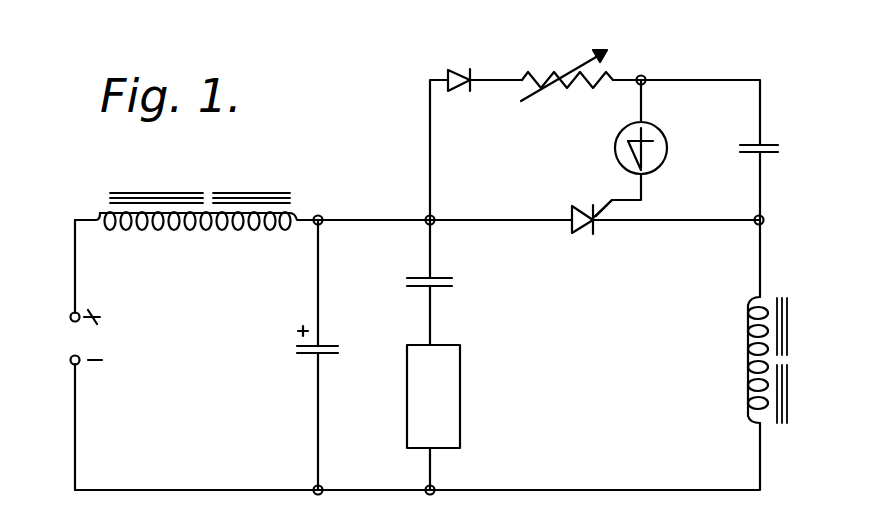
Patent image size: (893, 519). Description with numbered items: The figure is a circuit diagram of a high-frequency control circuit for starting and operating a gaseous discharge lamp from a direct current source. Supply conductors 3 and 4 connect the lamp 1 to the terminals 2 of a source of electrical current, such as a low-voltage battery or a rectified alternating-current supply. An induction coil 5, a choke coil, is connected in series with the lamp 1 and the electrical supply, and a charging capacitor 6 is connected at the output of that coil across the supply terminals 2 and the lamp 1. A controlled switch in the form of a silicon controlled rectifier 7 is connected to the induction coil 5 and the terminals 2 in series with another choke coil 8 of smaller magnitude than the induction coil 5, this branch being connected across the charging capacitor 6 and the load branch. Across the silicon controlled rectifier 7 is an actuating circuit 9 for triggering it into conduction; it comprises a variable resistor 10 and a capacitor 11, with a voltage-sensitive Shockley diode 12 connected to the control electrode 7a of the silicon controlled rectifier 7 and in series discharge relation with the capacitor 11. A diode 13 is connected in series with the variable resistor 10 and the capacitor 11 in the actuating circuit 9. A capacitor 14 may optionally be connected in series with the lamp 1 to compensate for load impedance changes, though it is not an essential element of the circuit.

The lamp 1 is at (461, 397).
The terminals 2 is at (70, 359).
The supply conductor 3 is at (84, 215).
The supply conductor 4 is at (243, 489).
The induction coil 5 is at (295, 196).
The charging capacitor 6 is at (340, 351).
The silicon controlled rectifier 7 is at (583, 227).
The control electrode 7a is at (601, 205).
The choke coil 8 is at (793, 367).
The actuating circuit 9 is at (690, 88).
The variable resistor 10 is at (553, 64).
The capacitor 11 is at (782, 150).
The Shockley diode 12 is at (668, 146).
The diode 13 is at (459, 90).
The capacitor 14 is at (469, 282).